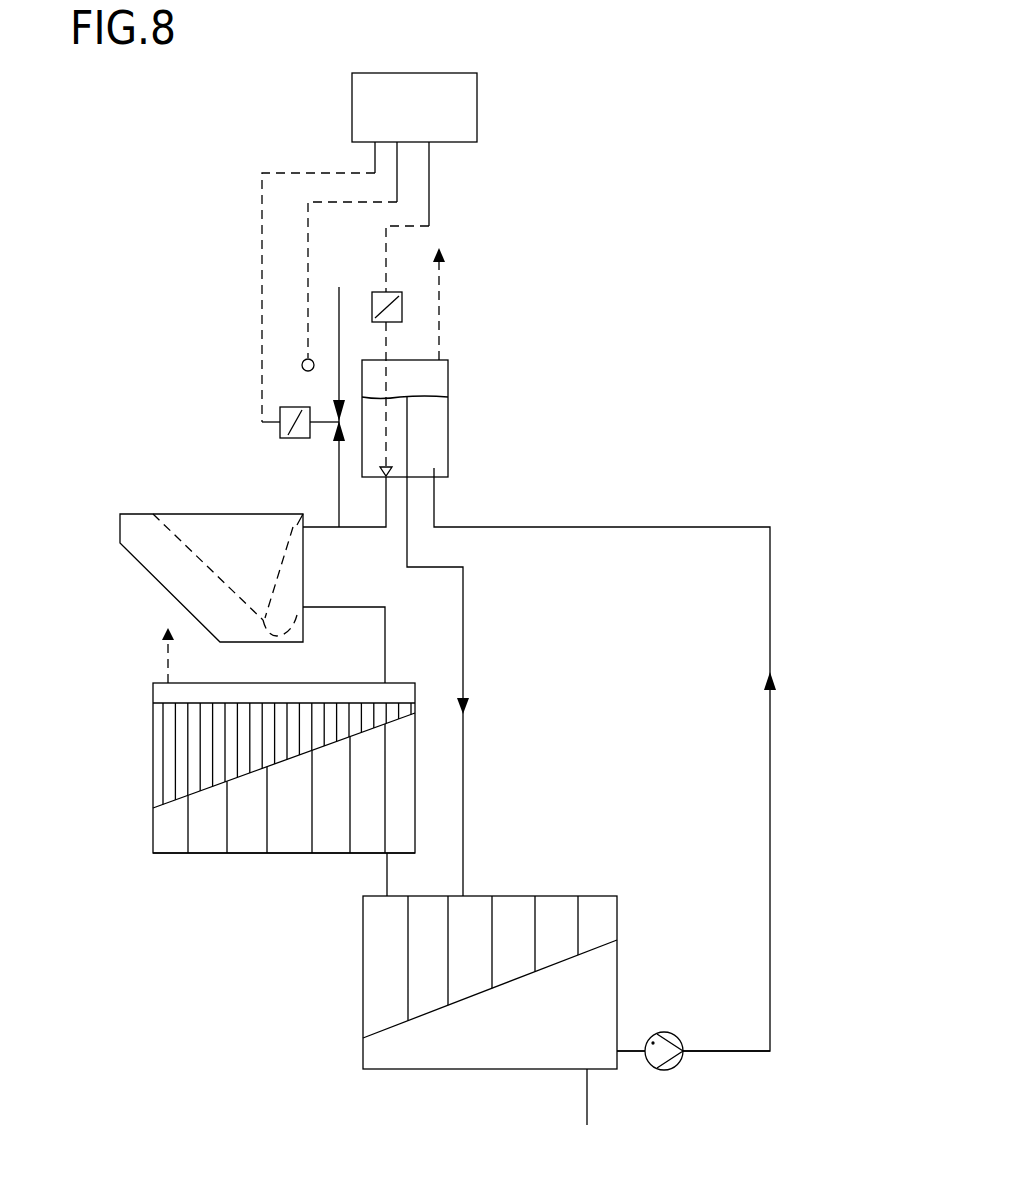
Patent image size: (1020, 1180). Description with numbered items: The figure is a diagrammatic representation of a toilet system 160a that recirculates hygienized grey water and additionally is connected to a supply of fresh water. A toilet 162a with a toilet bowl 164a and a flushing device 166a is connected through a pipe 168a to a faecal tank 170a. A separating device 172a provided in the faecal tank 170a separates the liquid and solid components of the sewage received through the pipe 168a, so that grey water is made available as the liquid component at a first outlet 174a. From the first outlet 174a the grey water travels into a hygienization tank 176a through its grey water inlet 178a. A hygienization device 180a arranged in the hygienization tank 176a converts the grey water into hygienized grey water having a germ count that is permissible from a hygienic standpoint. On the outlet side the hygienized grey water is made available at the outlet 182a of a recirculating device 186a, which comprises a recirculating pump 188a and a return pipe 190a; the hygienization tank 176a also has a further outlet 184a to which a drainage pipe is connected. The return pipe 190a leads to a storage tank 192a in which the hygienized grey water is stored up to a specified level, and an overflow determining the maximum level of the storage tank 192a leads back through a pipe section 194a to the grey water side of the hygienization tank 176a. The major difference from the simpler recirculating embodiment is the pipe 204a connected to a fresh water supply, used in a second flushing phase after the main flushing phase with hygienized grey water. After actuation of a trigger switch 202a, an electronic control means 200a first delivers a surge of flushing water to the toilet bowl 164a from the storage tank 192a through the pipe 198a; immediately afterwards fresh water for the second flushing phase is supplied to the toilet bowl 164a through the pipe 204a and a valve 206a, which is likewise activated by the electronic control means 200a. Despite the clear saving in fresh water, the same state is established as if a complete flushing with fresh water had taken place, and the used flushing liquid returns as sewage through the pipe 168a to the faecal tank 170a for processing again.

The toilet system 160a is at (192, 957).
The toilet 162a is at (165, 482).
The toilet bowl 164a is at (135, 514).
The flushing device 166a is at (221, 325).
The pipe 168a is at (366, 608).
The faecal tank 170a is at (153, 748).
The separating device 172a is at (210, 788).
The first outlet 174a is at (383, 858).
The hygienization tank 176a is at (363, 985).
The grey water inlet 178a is at (374, 888).
The hygienization device 180a is at (565, 960).
The outlet 182a is at (622, 1056).
The further outlet 184a is at (582, 1071).
The recirculating device 186a is at (778, 802).
The recirculating pump 188a is at (683, 1062).
The return pipe 190a is at (770, 870).
The storage tank 192a is at (448, 415).
The pipe section 194a is at (463, 740).
The pipe 198a is at (348, 528).
The electronic control means 200a is at (477, 106).
The trigger switch 202a is at (302, 368).
The pipe 204a is at (336, 305).
The valve 206a is at (334, 441).